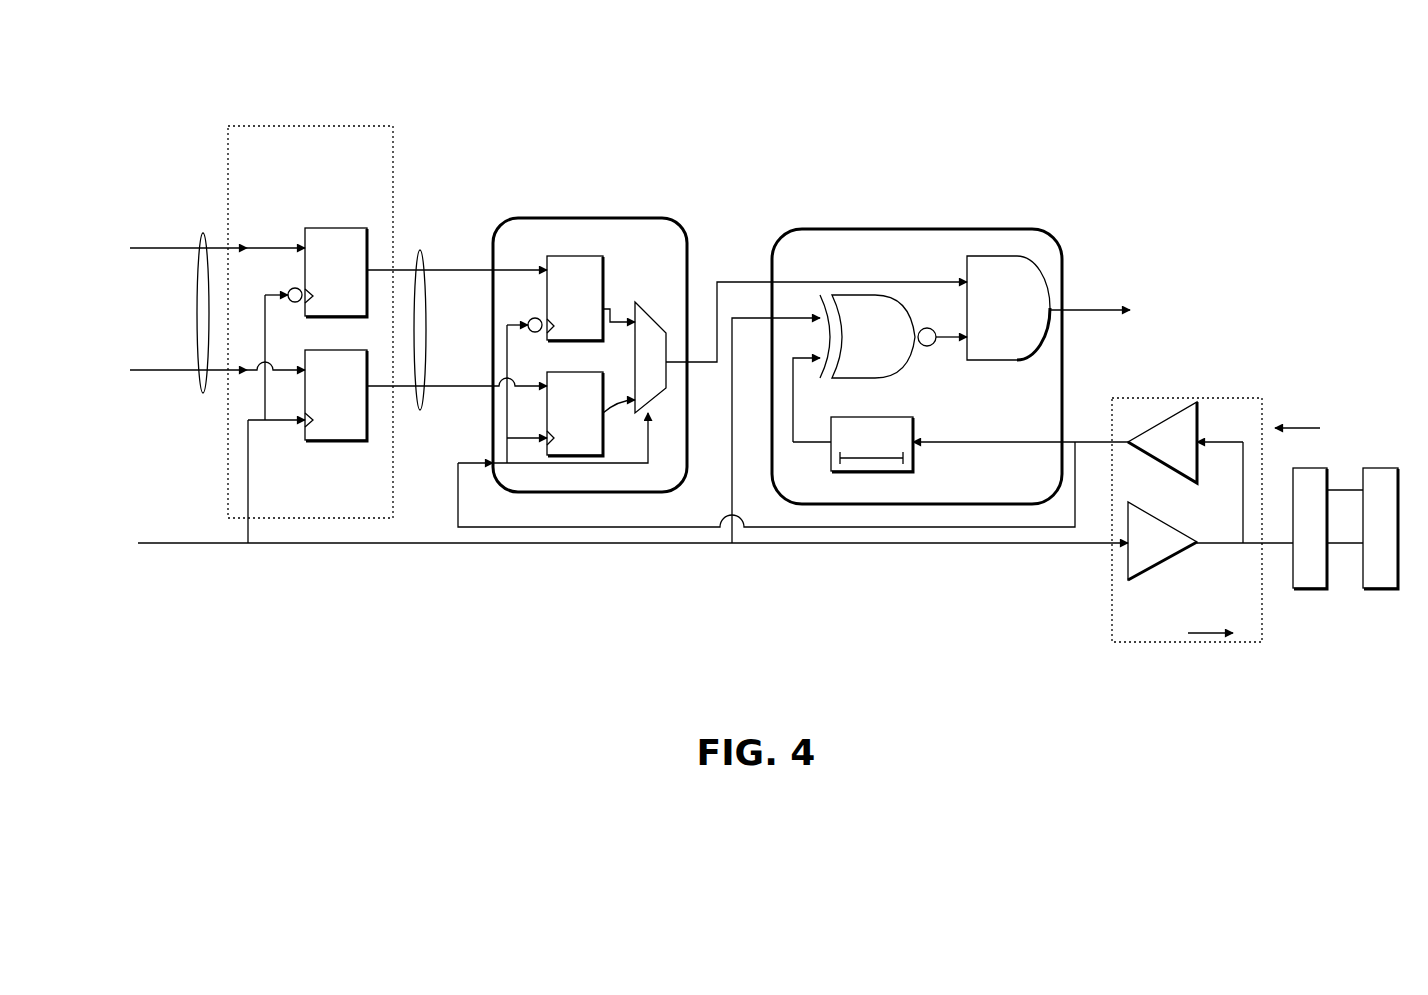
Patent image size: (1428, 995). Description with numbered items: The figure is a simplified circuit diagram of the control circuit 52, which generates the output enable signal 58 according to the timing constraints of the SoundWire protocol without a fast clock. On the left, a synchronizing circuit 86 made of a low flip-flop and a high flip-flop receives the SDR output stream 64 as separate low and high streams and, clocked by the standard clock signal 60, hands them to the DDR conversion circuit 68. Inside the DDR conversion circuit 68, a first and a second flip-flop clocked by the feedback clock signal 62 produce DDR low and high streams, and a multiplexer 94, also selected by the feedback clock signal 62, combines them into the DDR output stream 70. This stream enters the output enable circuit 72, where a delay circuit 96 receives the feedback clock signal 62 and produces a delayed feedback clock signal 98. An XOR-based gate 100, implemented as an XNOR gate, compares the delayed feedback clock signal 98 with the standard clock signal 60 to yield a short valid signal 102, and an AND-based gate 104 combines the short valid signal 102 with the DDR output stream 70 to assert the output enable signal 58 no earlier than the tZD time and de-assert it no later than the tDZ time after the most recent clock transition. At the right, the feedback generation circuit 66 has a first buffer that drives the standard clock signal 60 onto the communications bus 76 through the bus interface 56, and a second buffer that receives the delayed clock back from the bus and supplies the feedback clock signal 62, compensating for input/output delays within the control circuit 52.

The control circuit 52 is at (1207, 150).
The bus interface 56 is at (1305, 590).
The output enable signal 58 is at (1093, 304).
The standard clock signal 60 is at (345, 548).
The feedback clock signal 62 is at (1100, 448).
The SDR output stream 64 is at (207, 228).
The feedback generation circuit 66 is at (1212, 398).
The DDR conversion circuit 68 is at (538, 218).
The DDR output stream 70 is at (848, 278).
The output enable circuit 72 is at (1005, 229).
The communications bus 76 is at (1388, 590).
The synchronizing circuit 86 is at (330, 126).
The multiplexer 94 is at (650, 315).
The delay circuit 96 is at (915, 452).
The delayed feedback clock signal 98 is at (800, 392).
The XOR-based gate 100 is at (900, 370).
The short valid signal 102 is at (952, 328).
The AND-based gate 104 is at (1063, 344).